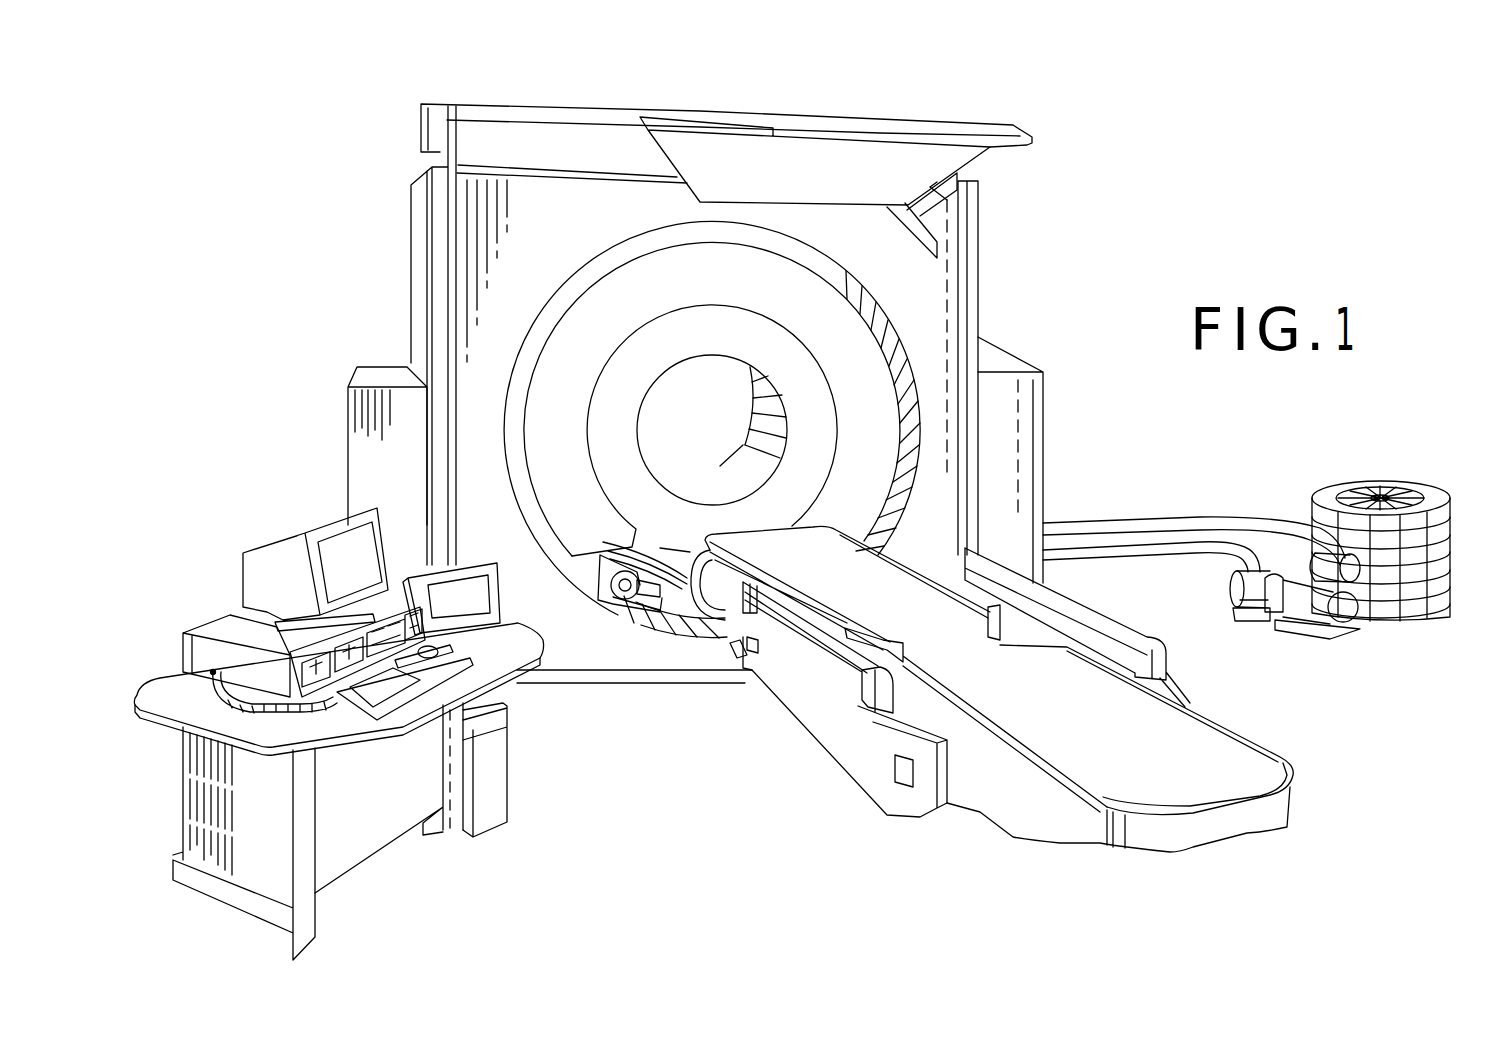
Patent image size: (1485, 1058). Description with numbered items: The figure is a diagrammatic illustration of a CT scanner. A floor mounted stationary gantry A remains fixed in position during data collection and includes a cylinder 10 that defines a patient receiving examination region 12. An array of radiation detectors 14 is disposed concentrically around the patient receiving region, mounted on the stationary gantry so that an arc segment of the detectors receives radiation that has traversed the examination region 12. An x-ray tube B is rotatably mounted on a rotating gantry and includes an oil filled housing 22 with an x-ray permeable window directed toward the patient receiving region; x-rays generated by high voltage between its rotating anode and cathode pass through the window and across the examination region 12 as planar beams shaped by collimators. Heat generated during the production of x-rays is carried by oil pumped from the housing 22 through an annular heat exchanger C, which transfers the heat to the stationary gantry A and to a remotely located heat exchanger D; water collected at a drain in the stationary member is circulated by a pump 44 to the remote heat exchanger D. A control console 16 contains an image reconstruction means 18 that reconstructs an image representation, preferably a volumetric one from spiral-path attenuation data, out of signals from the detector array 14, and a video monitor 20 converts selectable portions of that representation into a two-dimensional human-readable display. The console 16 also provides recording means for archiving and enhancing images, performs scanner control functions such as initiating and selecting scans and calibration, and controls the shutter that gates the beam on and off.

The stationary gantry A is at (1005, 330).
The x-ray tube B is at (608, 610).
The annular heat exchanger C is at (556, 415).
The remotely located heat exchanger D is at (1390, 473).
The cylinder 10 is at (770, 405).
The patient receiving examination region 12 is at (726, 440).
The array of radiation detectors 14 is at (873, 317).
The control console 16 is at (280, 518).
The image reconstruction means 18 is at (253, 628).
The video monitor 20 is at (350, 555).
The oil filled housing 22 is at (633, 612).
The pump 44 is at (1350, 568).